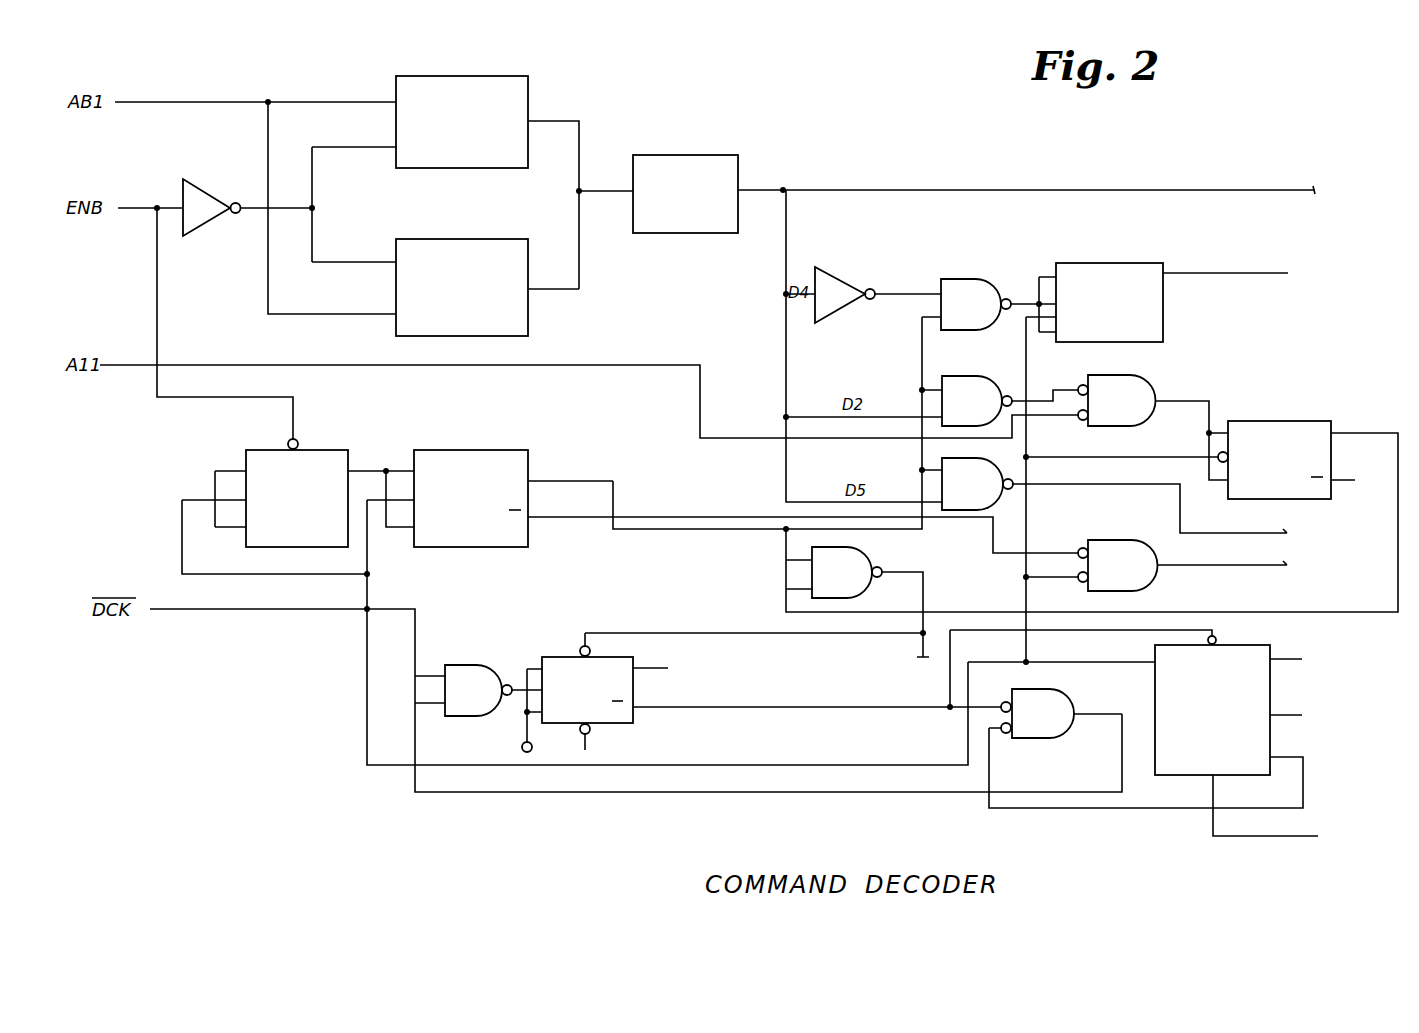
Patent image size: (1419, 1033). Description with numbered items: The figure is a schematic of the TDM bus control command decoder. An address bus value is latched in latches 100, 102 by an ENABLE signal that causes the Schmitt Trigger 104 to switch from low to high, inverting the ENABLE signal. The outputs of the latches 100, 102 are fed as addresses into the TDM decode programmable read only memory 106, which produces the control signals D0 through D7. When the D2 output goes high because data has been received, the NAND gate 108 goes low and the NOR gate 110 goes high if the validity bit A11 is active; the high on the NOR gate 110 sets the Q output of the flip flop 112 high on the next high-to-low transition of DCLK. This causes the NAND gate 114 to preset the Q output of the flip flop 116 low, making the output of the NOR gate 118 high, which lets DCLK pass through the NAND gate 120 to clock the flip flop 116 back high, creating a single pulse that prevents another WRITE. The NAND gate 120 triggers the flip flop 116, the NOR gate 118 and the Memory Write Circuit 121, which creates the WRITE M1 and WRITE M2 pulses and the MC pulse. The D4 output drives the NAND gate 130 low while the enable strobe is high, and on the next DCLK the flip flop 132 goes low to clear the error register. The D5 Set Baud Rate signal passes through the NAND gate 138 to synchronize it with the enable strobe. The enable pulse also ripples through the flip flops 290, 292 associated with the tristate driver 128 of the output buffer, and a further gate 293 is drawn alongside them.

The latch 100 is at (514, 182).
The latch 102 is at (487, 287).
The Schmitt Trigger 104 is at (204, 196).
The TDM decode programmable read only memory (PROM) 106 is at (1011, 194).
The NAND gate 108 is at (958, 378).
The NOR gate 110 is at (1140, 386).
The flip flop 112 is at (1092, 513).
The NAND gate 114 is at (872, 562).
The flip flop 116 is at (771, 691).
The NOR gate 118 is at (1058, 698).
The NAND gate 120 is at (466, 666).
The Memory Write Circuit 121 is at (1269, 741).
The tristate driver 128 is at (828, 276).
The NAND gate 130 is at (982, 284).
The flip flop 132 is at (1206, 295).
The NAND gate 138 is at (1000, 490).
The flip flop 290 is at (298, 508).
The flip flop 292 is at (746, 501).
The gate 293 is at (1218, 567).